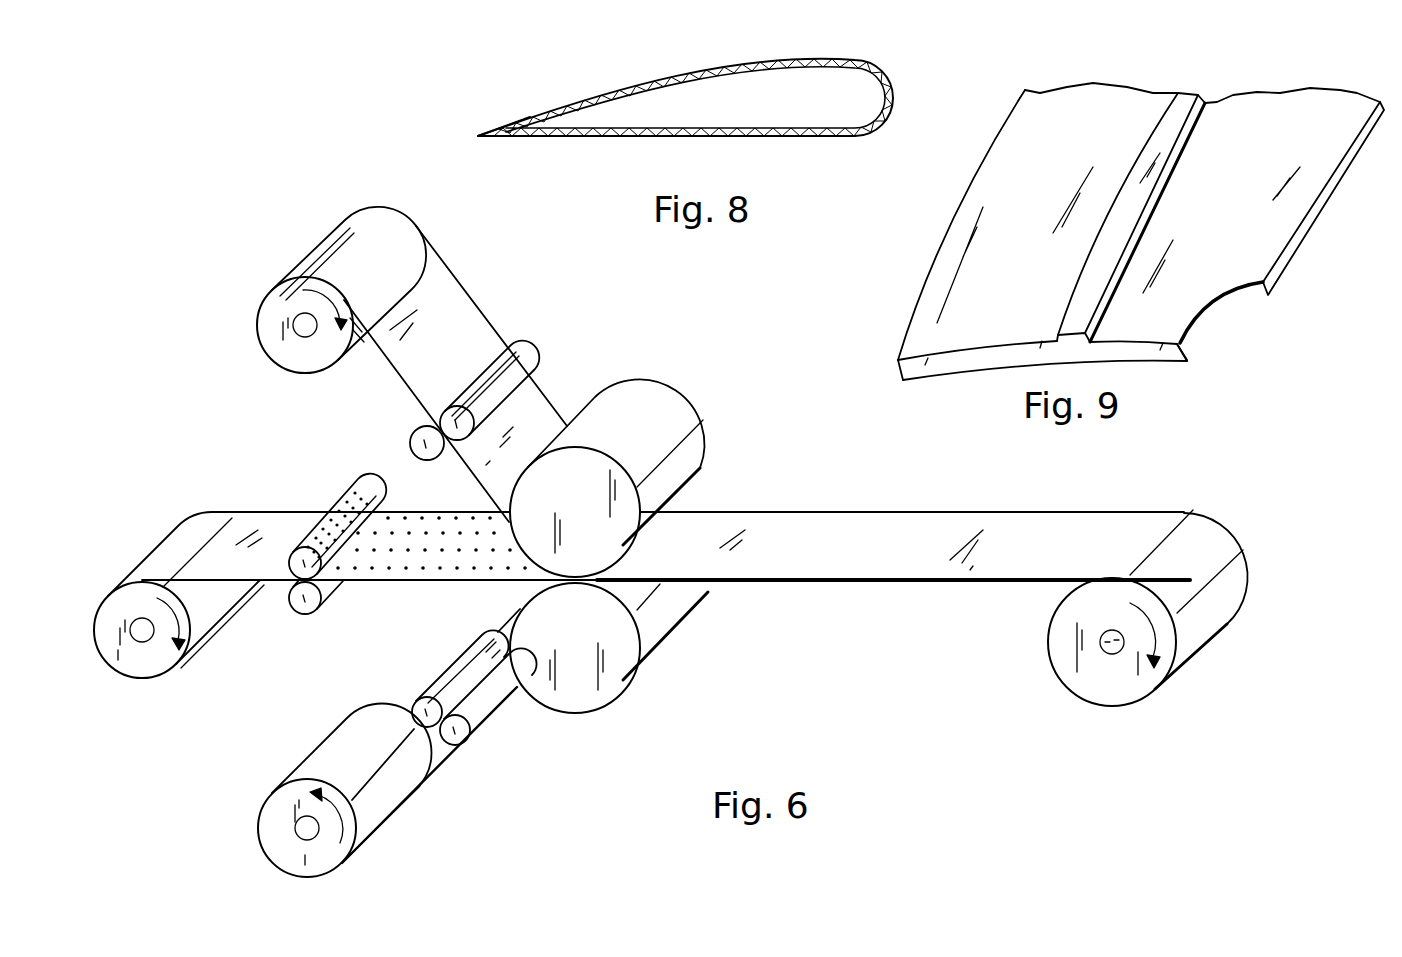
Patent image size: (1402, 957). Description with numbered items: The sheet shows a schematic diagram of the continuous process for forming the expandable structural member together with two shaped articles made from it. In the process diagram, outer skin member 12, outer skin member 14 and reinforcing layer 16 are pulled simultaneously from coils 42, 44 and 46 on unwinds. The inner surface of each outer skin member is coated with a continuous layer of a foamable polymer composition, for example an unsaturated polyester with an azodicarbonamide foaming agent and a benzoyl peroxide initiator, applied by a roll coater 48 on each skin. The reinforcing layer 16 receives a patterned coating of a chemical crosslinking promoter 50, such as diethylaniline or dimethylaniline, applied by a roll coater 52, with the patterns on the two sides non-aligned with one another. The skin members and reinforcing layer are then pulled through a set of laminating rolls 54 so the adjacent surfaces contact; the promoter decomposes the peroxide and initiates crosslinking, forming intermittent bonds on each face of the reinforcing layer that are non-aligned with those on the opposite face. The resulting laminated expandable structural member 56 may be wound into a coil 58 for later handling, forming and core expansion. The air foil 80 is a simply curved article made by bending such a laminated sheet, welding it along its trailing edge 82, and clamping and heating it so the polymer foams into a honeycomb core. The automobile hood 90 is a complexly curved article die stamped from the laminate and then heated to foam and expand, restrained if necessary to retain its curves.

In FIG. 6, the outer skin member 12 is at (463, 327).
In FIG. 6, the outer skin member 14 is at (427, 768).
In FIG. 6, the reinforcing layer 16 is at (268, 565).
In FIG. 6, the coil 42 is at (308, 362).
In FIG. 6, the coil 44 is at (323, 860).
In FIG. 6, the coil 46 is at (148, 667).
In FIG. 6, the roll coater 48 is at (527, 350).
In FIG. 6, the chemical crosslinking promoter 50 is at (407, 518).
In FIG. 6, the roll coater 52 is at (372, 482).
In FIG. 6, the laminating rolls 54 is at (688, 446).
In FIG. 6, the laminated expandable structural member 56 is at (915, 527).
In FIG. 6, the coil 58 is at (1115, 687).
In FIG. 8, the air foil 80 is at (692, 68).
In FIG. 8, the trailing edge 82 is at (481, 133).
In FIG. 9, the automobile hood 90 is at (1326, 100).